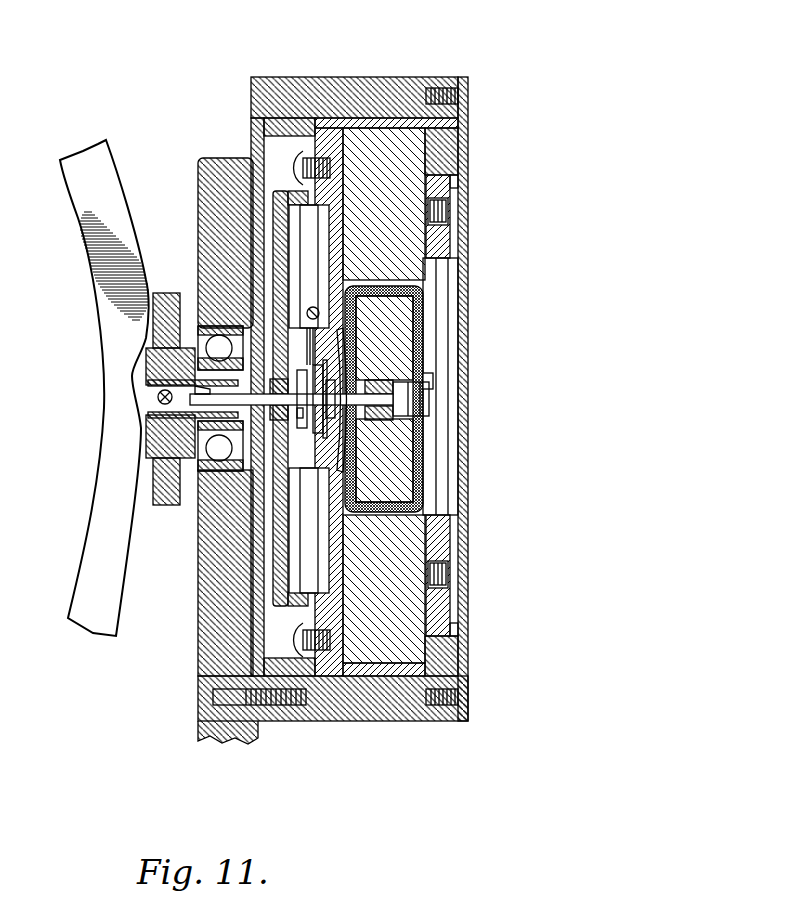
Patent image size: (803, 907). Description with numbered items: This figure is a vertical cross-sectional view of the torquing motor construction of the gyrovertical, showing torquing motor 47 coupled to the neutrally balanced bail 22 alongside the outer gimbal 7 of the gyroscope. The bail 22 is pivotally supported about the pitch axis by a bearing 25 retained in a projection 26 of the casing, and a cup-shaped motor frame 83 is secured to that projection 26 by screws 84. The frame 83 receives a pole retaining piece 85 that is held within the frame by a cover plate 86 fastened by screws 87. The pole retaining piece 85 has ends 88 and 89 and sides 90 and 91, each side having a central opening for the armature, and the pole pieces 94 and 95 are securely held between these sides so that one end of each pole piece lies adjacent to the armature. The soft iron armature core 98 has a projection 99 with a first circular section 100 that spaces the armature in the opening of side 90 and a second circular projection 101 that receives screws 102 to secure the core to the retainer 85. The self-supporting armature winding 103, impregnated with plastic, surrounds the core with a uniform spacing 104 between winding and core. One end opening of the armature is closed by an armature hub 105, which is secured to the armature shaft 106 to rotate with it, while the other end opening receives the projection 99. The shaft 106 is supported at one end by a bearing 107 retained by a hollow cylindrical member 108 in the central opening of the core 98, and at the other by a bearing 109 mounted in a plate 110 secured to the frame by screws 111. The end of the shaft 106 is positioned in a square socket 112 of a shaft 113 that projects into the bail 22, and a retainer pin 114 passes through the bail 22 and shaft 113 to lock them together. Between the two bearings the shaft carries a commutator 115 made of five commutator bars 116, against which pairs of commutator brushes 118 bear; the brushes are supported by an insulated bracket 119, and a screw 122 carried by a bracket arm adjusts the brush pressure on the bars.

The outer gimbal 7 is at (95, 486).
The bail 22 is at (160, 490).
The bearing 25 is at (195, 320).
The projection 26 is at (220, 600).
The torquing motor 47 is at (354, 69).
The motor frame 83 is at (335, 700).
The screws 84 is at (200, 689).
The pole retaining piece 85 is at (440, 132).
The cover plate 86 is at (455, 318).
The screws 87 is at (446, 89).
The end 88 is at (383, 110).
The end 89 is at (370, 667).
The side 90 is at (435, 240).
The side 91 is at (328, 219).
The pole piece 94 is at (405, 632).
The pole piece 95 is at (400, 158).
The armature core 98 is at (390, 452).
The projection 99 is at (420, 395).
The first circular section 100 is at (436, 289).
The second circular projection 101 is at (445, 178).
The screws 102 is at (440, 205).
The armature winding 103 is at (420, 437).
The uniform spacing 104 is at (397, 285).
The armature hub 105 is at (330, 455).
The armature shaft 106 is at (345, 378).
The bearing 107 is at (372, 402).
The hollow cylindrical member 108 is at (410, 380).
The bearing 109 is at (292, 408).
The plate 110 is at (270, 219).
The screws 111 is at (280, 152).
The square socket 112 is at (185, 383).
The shaft 113 is at (150, 391).
The retainer pin 114 is at (185, 395).
The commutator 115 is at (300, 385).
The commutator bars 116 is at (305, 400).
The commutator brushes 118 is at (290, 380).
The insulated bracket 119 is at (288, 243).
The screw 122 is at (305, 300).